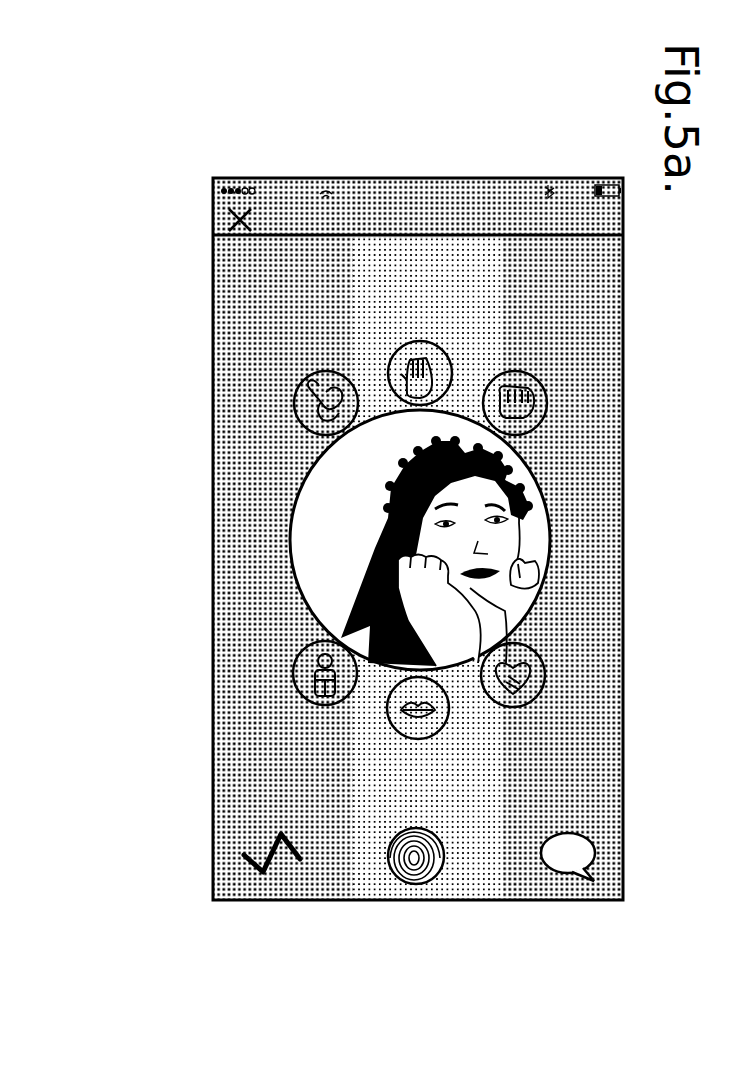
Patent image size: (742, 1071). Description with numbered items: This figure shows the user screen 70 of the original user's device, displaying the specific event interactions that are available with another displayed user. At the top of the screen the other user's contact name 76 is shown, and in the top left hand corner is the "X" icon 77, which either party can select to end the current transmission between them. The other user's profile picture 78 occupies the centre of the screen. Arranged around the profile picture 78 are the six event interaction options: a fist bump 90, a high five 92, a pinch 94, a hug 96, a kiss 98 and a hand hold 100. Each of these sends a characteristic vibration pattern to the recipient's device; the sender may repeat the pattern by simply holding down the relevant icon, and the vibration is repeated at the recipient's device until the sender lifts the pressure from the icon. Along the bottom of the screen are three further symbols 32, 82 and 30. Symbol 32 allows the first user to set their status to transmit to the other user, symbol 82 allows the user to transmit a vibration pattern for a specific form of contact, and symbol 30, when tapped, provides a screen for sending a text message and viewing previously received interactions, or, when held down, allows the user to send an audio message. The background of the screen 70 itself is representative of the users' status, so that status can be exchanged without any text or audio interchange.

The screen 70 is at (592, 322).
The contact name 76 is at (440, 215).
The "X" icon 77 is at (215, 206).
The profile picture 78 is at (532, 538).
The fist bump 90 is at (540, 398).
The high 5 92 is at (433, 342).
The pinch 94 is at (287, 392).
The hug 96 is at (285, 690).
The kiss 98 is at (436, 706).
The hand hold 100 is at (538, 688).
The symbol 32 is at (273, 843).
The symbol 82 is at (432, 856).
The symbol 30 is at (578, 850).